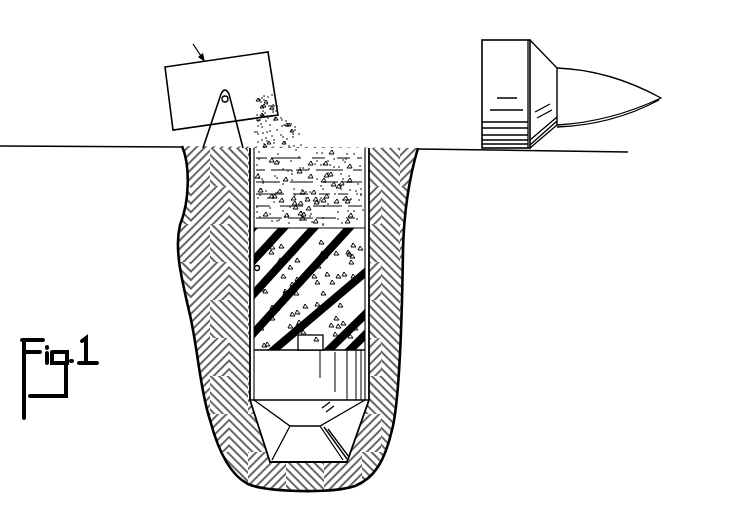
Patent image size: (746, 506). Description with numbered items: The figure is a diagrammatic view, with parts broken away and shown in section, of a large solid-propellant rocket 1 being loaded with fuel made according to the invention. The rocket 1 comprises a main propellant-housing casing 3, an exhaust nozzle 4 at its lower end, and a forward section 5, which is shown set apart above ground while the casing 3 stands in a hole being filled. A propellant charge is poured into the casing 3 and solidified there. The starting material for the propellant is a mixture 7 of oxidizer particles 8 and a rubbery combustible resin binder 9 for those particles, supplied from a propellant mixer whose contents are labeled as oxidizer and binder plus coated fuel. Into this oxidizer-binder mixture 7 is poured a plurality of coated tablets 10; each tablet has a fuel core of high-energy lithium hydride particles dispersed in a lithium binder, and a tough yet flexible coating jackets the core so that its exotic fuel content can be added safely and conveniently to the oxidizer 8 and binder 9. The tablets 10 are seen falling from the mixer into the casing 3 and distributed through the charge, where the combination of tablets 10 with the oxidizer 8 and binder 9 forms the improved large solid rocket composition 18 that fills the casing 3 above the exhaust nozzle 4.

The rocket 1 is at (372, 296).
The main propellant-housing casing 3 is at (367, 247).
The exhaust nozzle 4 is at (337, 440).
The forward section 5 is at (557, 78).
The mixture 7 is at (239, 56).
The oxidizer particles 8 is at (254, 290).
The rubbery combustible resin binder 9 is at (252, 236).
The coated tablets 10 is at (297, 133).
The large solid rocket composition 18 is at (345, 327).